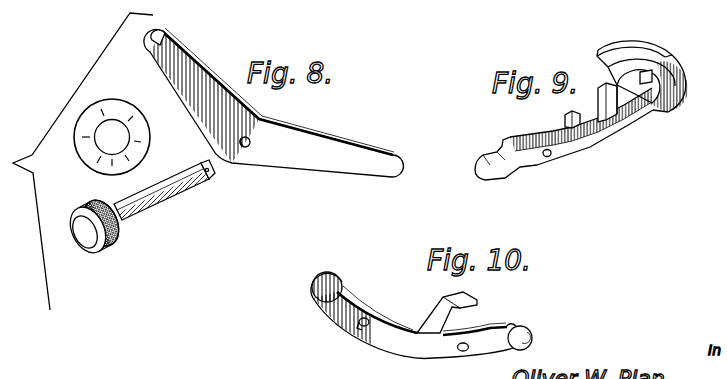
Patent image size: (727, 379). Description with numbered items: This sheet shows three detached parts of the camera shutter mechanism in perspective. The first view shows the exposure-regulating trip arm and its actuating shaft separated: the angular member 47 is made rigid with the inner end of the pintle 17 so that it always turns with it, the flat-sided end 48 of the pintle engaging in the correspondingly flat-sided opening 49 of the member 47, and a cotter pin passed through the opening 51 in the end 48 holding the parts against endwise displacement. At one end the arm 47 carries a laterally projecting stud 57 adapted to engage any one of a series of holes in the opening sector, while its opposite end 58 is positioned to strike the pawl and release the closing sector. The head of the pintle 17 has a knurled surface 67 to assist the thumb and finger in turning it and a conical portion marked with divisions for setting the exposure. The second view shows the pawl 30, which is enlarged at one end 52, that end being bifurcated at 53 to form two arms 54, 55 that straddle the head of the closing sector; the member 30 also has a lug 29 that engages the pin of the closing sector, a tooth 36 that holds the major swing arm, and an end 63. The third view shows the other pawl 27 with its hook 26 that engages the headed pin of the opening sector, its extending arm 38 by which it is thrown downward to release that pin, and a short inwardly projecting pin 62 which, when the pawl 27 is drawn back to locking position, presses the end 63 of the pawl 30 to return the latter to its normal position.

In FIG. 8, the pintle 17 is at (157, 207).
In FIG. 10, the hook 26 is at (340, 284).
In FIG. 10, the pawl 27 is at (386, 344).
In FIG. 9, the lug 29 is at (603, 80).
In FIG. 9, the pawl 30 is at (590, 140).
In FIG. 9, the tooth 36 is at (568, 113).
In FIG. 10, the arm 38 is at (442, 307).
In FIG. 8, the angular member 47 is at (323, 148).
In FIG. 8, the end of pintle 48 is at (207, 178).
In FIG. 8, the opening 49 is at (255, 138).
In FIG. 8, the opening 51 is at (209, 168).
In FIG. 9, the enlarged end 52 is at (678, 88).
In FIG. 9, the bifurcation 53 is at (633, 45).
In FIG. 9, the arm 54 is at (600, 58).
In FIG. 9, the arm 55 is at (660, 55).
In FIG. 8, the stud 57 is at (155, 53).
In FIG. 8, the end of trip arm 58 is at (375, 162).
In FIG. 10, the pin 62 is at (532, 340).
In FIG. 9, the end of pawl 63 is at (495, 170).
In FIG. 8, the knurled surface 67 is at (118, 235).